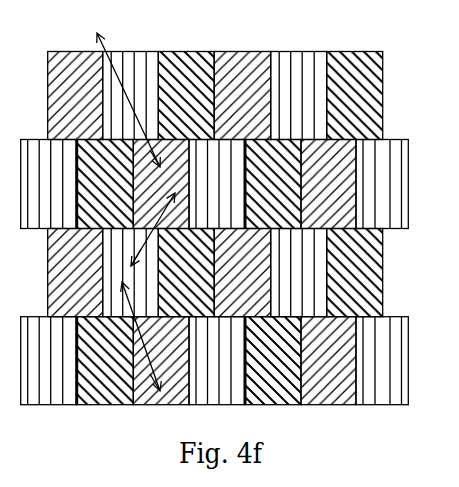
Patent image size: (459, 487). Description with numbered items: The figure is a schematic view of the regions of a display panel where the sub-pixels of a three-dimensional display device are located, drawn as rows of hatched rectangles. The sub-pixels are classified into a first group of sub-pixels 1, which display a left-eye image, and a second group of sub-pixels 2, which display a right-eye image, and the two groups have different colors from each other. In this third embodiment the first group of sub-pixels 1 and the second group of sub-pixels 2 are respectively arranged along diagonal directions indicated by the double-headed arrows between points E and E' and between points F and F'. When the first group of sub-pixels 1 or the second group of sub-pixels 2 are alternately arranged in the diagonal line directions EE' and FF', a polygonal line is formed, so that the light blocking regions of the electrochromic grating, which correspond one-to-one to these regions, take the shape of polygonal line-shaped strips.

The first group of sub-pixels 1 is at (202, 228).
The second group of sub-pixels 2 is at (215, 228).
The diagonal line EE' endpoint E is at (121, 206).
The diagonal line EE' endpoint E' is at (164, 272).
The diagonal line FF' endpoint F is at (160, 225).
The diagonal line FF' endpoint F' is at (130, 255).